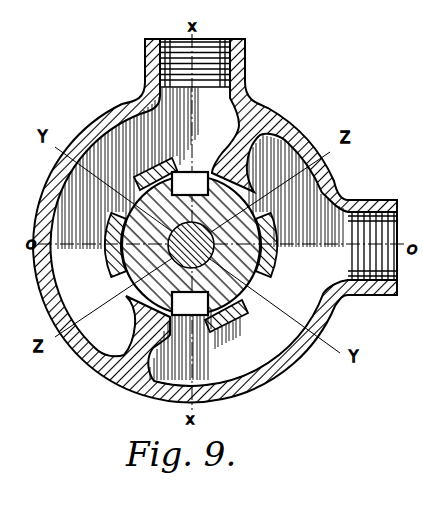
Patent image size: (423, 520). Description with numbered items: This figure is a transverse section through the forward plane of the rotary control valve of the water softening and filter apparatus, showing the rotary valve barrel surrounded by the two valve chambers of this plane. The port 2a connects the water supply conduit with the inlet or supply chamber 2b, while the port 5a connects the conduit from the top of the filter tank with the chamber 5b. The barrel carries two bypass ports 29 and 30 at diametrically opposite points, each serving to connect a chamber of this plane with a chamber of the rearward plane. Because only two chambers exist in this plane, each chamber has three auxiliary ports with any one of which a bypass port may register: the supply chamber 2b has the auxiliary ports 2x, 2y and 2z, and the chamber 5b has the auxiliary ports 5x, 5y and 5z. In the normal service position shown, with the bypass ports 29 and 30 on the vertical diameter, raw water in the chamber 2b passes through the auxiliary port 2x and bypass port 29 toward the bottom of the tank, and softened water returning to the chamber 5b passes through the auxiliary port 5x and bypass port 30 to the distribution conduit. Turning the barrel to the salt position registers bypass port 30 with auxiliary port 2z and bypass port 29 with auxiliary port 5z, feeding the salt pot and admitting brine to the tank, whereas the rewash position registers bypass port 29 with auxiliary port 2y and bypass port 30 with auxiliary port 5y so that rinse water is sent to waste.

The port 5a is at (212, 43).
The port 2a is at (372, 213).
The valve chamber 5b is at (108, 173).
The auxiliary port 5x is at (193, 165).
The auxiliary port 5y is at (133, 198).
The auxiliary port 5z is at (120, 280).
The auxiliary port 2x is at (203, 326).
The auxiliary port 2y is at (266, 284).
The auxiliary port 2z is at (296, 190).
The inlet or supply chamber 2b is at (312, 328).
The bypass port 29 is at (190, 303).
The bypass port 30 is at (190, 183).